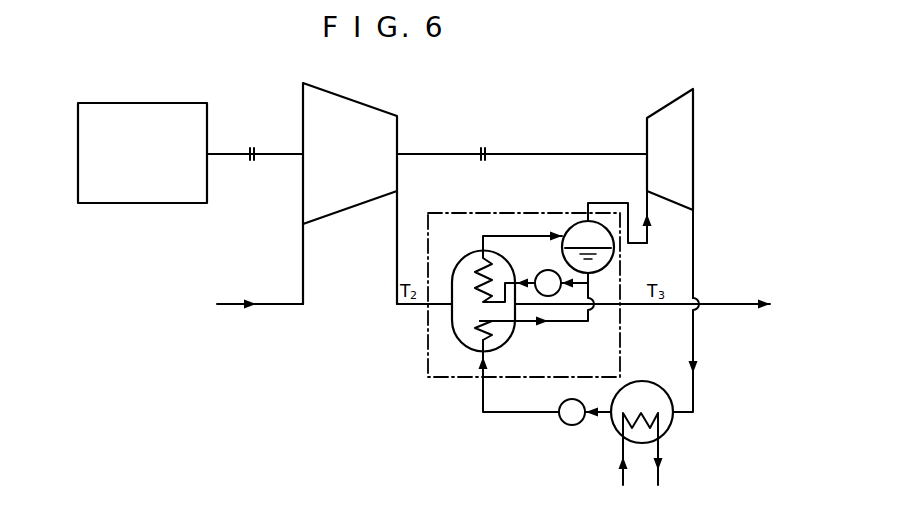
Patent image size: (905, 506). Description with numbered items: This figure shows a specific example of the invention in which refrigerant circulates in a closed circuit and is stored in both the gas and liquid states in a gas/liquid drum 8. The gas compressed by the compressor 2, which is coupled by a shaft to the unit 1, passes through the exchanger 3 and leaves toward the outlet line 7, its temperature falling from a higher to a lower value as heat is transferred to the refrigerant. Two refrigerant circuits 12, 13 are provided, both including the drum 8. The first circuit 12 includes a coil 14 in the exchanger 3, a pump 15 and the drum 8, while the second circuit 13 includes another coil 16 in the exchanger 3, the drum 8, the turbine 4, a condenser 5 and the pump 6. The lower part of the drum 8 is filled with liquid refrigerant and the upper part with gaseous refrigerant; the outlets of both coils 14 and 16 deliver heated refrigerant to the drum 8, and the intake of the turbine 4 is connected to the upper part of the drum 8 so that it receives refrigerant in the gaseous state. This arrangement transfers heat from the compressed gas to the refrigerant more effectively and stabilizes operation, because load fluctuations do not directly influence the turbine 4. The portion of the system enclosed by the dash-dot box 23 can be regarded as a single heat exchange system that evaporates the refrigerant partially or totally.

The generator 1 is at (147, 193).
The gas turbine 2 is at (344, 201).
The exchanger 3 is at (452, 323).
The turbine 4 is at (687, 180).
The condenser 5 is at (664, 433).
The pump 6 is at (571, 424).
The exhaust gas outlet line 7 is at (724, 302).
The gas/liquid drum 8 is at (572, 233).
The first refrigerant circuit 12 is at (490, 233).
The second refrigerant circuit 13 is at (497, 416).
The coil 14 is at (475, 273).
The pump 15 is at (540, 272).
The coil 16 is at (477, 325).
The box 23 is at (468, 380).